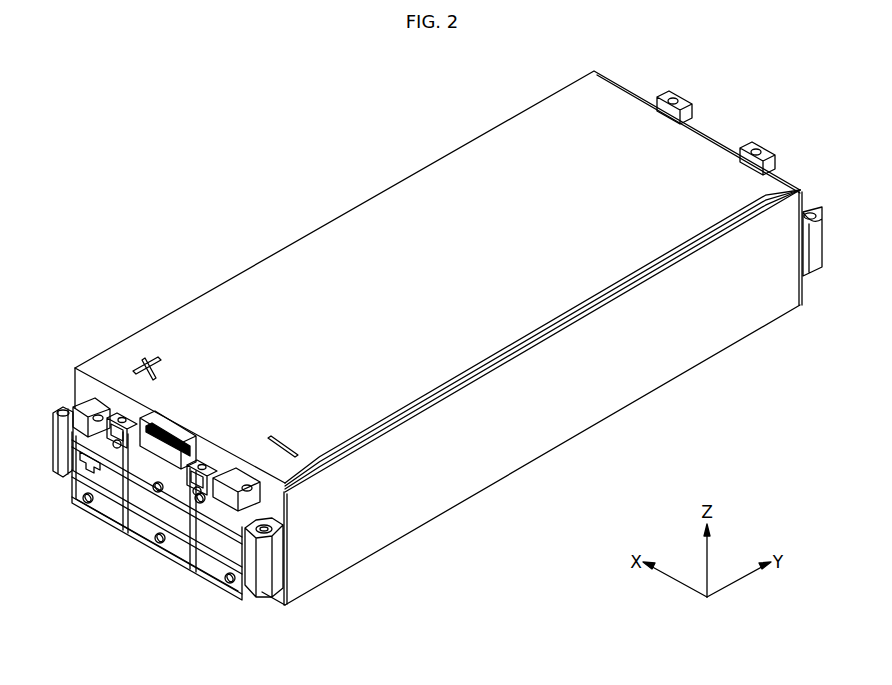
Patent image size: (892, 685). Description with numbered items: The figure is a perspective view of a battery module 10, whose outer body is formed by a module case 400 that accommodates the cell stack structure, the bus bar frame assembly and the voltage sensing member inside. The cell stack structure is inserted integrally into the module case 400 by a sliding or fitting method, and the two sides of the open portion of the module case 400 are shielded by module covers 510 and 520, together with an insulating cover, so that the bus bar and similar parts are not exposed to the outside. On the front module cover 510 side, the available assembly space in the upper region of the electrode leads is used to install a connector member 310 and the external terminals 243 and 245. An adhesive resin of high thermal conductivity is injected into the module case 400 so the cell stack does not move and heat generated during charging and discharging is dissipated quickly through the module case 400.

The battery module 10 is at (218, 97).
The module case 400 is at (362, 224).
The module cover 520 is at (817, 212).
The external terminal 243 is at (97, 411).
The external terminal 245 is at (246, 504).
The connector member 310 is at (151, 448).
The module cover 510 is at (182, 551).